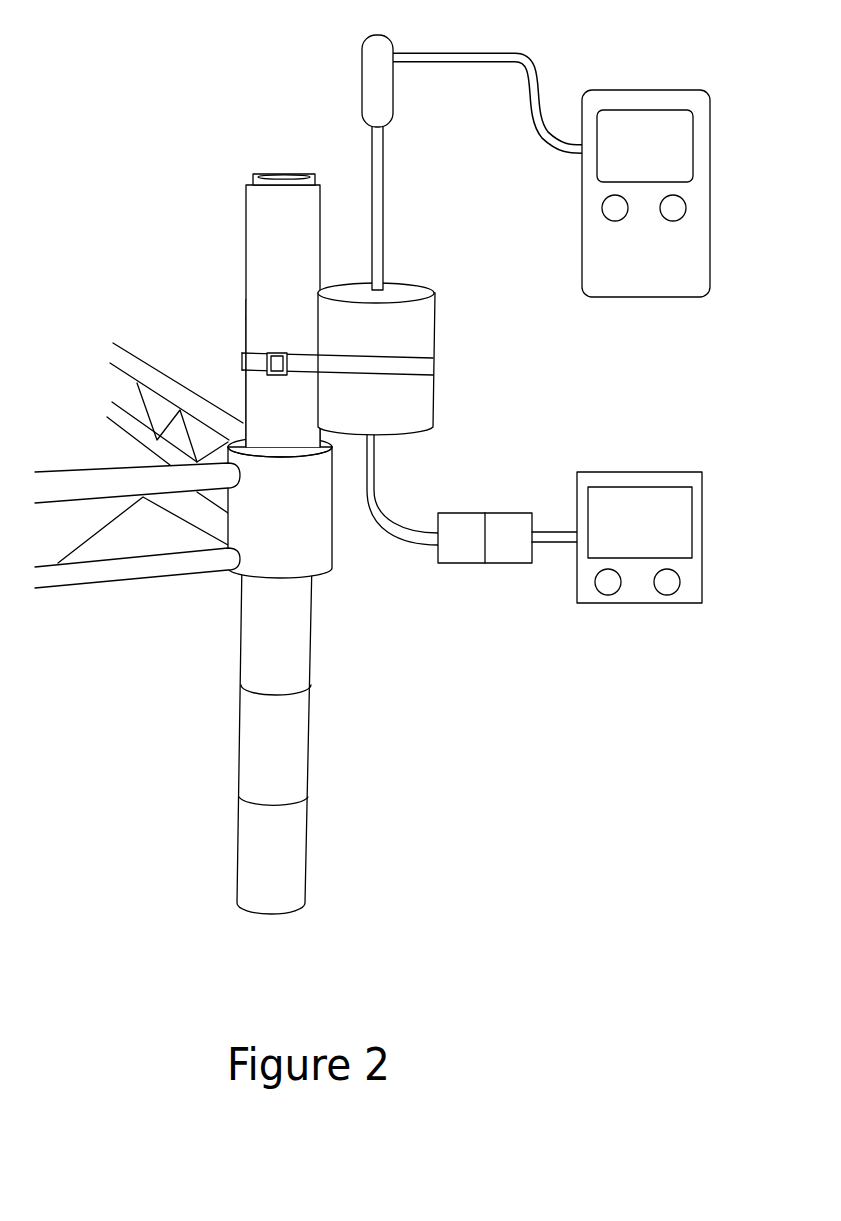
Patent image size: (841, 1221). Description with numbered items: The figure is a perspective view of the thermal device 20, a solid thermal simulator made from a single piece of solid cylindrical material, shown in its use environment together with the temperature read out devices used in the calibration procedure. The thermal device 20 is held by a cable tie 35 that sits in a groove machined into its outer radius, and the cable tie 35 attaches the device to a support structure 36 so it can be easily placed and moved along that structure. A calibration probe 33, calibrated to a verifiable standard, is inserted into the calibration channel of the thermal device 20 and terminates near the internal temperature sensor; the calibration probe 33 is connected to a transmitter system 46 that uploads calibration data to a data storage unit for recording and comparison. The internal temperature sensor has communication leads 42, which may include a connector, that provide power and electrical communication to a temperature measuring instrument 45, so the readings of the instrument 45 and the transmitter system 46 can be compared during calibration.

The thermal device 20 is at (407, 333).
The calibration probe 33 is at (368, 167).
The cable tie 35 is at (242, 354).
The support structure 36 is at (282, 757).
The communication leads 42 is at (378, 505).
The temperature measuring instrument 45 is at (675, 472).
The transmitter system 46 is at (666, 90).